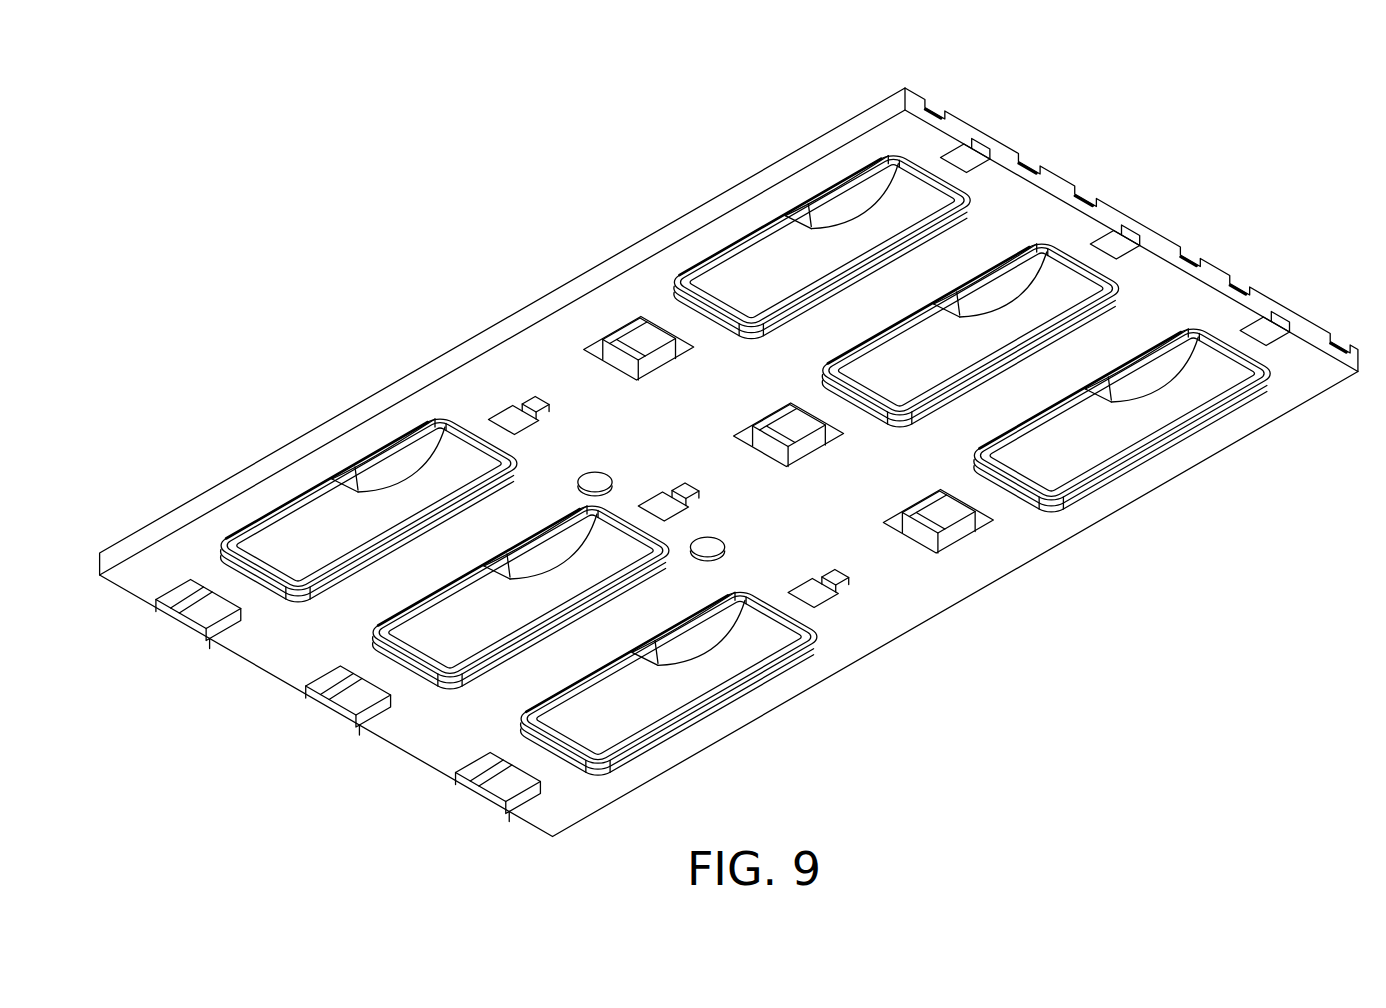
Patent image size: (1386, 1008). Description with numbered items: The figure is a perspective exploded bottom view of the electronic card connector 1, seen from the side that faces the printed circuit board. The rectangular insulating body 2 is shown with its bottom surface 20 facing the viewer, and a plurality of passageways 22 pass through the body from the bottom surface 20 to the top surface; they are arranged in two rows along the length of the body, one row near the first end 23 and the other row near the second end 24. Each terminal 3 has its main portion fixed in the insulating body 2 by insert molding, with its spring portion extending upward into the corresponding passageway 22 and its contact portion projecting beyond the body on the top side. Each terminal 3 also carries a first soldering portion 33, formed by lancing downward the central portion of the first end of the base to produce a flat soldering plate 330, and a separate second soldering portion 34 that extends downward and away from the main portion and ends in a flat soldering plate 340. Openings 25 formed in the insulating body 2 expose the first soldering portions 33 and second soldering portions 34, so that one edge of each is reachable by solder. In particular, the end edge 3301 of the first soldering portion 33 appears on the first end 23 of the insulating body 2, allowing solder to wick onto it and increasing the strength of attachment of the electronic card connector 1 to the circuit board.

The electronic card connector 1 is at (733, 436).
The insulating body 2 is at (733, 436).
The bottom surface 20 is at (1319, 381).
The passageway 22 is at (738, 262).
The first end 23 is at (1348, 338).
The second end 24 is at (127, 595).
The opening 25 is at (548, 407).
The terminal 3 is at (1148, 380).
The first soldering portion 33 is at (813, 597).
The flat soldering plate 330 is at (1259, 325).
The end edge 3301 is at (1282, 315).
The second soldering portion 34 is at (633, 347).
The flat soldering plate 340 is at (470, 790).